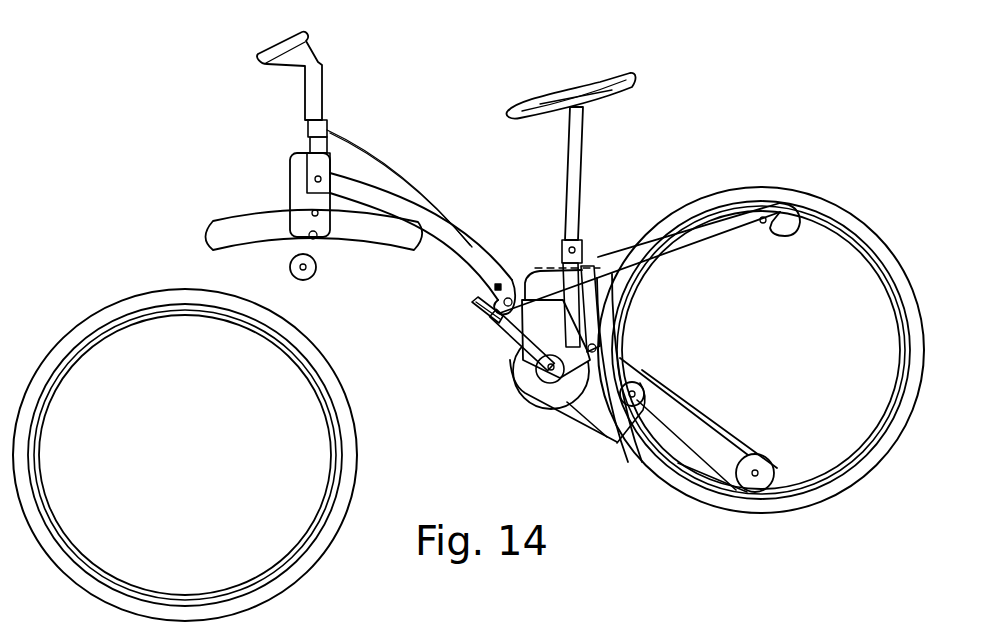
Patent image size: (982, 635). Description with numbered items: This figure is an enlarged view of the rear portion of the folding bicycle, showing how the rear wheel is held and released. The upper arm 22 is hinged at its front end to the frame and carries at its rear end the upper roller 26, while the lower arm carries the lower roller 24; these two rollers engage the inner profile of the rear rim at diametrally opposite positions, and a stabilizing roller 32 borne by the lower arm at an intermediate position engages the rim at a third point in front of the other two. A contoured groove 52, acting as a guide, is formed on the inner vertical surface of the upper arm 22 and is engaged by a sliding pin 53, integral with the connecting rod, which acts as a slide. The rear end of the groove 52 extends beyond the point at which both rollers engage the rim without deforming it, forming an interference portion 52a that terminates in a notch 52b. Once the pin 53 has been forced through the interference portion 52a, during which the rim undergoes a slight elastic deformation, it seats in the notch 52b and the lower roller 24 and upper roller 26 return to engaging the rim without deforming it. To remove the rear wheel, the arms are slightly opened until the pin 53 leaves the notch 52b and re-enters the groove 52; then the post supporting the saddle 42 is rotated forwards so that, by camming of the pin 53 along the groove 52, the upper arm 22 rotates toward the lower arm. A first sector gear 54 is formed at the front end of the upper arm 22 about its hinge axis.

The upper arm 22 is at (718, 230).
The lower roller 24 is at (762, 492).
The upper roller 26 is at (800, 210).
The stabilizing roller 32 is at (617, 443).
The saddle 42 is at (593, 83).
The contoured groove 52 is at (538, 270).
The interference portion 52a is at (594, 266).
The notch 52b is at (600, 268).
The sliding pin 53 is at (593, 290).
The first sector gear 54 is at (497, 297).